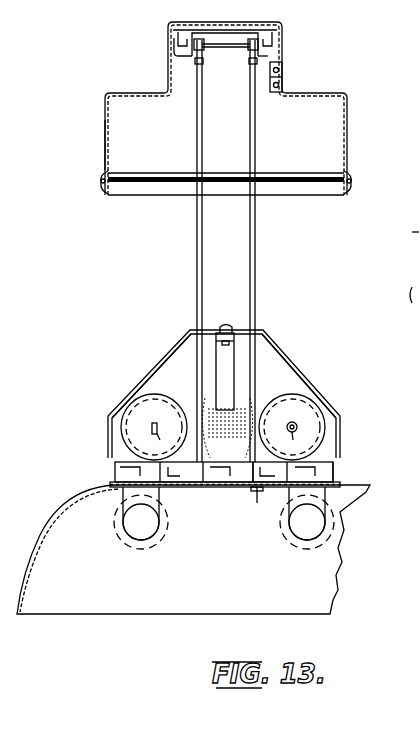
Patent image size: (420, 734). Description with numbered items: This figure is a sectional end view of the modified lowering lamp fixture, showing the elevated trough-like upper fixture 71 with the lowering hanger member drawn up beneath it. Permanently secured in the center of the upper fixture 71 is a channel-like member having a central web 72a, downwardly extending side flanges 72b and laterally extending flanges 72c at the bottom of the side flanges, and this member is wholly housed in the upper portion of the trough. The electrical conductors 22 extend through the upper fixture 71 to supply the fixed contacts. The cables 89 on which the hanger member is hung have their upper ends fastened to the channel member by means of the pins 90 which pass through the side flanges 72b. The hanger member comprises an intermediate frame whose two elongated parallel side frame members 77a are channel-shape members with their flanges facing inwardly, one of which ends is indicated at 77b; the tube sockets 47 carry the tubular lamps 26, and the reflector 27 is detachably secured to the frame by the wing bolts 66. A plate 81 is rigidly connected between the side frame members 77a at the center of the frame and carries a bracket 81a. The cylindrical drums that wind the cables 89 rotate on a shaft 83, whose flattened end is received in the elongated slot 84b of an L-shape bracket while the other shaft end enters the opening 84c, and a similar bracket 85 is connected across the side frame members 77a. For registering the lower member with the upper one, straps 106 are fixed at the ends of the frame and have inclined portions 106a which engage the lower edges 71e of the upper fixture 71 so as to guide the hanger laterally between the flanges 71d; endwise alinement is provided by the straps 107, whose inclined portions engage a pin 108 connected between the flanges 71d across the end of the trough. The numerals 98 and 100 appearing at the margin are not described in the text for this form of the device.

The electrical conductors 22 is at (268, 90).
The tubular lamps 26 is at (170, 530).
The reflector 27 is at (34, 530).
The tube sockets 47 is at (224, 522).
The wing bolts 66 is at (257, 503).
The upper fixture 71 is at (104, 93).
The flanges 71d is at (105, 143).
The lower edges 71e is at (105, 196).
The central web 72a is at (231, 30).
The side flanges 72b is at (178, 38).
The laterally extending flanges 72c is at (176, 58).
The side frame members 77a is at (115, 470).
The base plate end 77b is at (334, 480).
The plate 81 is at (334, 484).
The bracket 81a is at (250, 472).
The shaft 83 is at (229, 442).
The elongated slot 84b is at (157, 430).
The opening 84c is at (288, 427).
The bracket 85 is at (262, 414).
The cables 89 is at (197, 253).
The pins 90 is at (235, 48).
The part 98 is at (412, 279).
The part 100 is at (412, 232).
The straps 106 is at (108, 440).
The inclined portions 106a is at (154, 368).
The straps 107 is at (235, 358).
The pin 108 is at (283, 172).